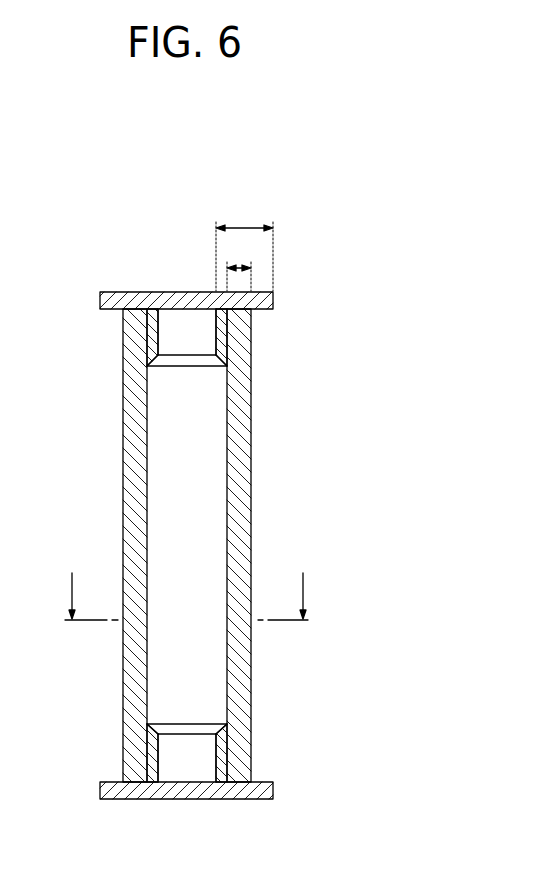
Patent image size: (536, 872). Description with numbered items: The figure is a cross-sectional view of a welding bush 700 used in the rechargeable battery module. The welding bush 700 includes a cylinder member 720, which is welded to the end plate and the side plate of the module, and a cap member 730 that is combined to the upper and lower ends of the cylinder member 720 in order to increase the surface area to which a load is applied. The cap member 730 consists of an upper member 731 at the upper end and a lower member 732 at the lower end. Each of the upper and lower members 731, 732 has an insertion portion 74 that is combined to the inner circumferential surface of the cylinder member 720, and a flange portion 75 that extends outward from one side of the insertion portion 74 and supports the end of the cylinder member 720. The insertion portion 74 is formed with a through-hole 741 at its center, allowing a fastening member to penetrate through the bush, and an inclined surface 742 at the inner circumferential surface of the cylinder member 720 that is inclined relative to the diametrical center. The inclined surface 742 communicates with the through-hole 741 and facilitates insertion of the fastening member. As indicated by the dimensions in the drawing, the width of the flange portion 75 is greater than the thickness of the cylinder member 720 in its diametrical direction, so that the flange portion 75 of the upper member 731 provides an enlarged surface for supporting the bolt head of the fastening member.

The welding bush 700 is at (324, 232).
The cylinder member 720 is at (138, 455).
The cap member 730 is at (256, 539).
The upper member 731 is at (283, 297).
The lower member 732 is at (283, 788).
The insertion portion 74 is at (152, 335).
The through-hole 741 is at (183, 312).
The inclined surface 742 is at (224, 358).
The flange portion 75 is at (128, 298).